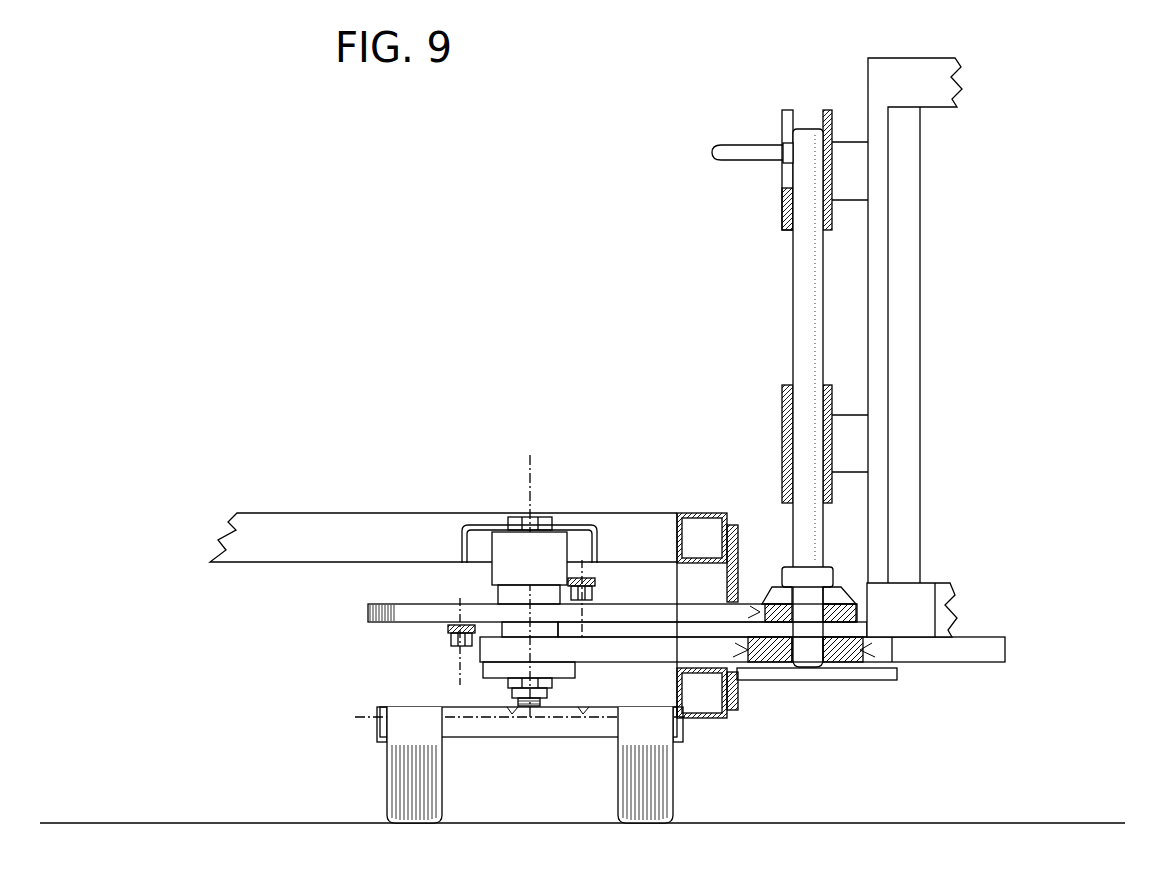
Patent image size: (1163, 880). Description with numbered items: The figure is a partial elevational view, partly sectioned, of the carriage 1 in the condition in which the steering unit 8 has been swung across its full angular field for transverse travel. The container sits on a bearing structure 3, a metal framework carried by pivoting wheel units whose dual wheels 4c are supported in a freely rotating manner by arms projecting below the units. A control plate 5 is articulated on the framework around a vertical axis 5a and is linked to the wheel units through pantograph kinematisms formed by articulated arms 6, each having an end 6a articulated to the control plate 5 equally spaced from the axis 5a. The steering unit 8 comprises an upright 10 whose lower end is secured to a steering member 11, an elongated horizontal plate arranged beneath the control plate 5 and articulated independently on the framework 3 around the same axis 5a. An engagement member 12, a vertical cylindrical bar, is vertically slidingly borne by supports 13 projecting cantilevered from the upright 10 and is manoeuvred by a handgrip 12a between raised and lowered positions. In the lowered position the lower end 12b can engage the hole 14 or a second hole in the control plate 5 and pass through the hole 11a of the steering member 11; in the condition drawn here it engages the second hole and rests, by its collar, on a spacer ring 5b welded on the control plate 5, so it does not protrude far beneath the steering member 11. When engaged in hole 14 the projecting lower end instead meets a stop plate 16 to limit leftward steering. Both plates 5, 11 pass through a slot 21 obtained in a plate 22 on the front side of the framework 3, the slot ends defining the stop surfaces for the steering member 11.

The carriage 1 is at (245, 250).
The bearing structure 3 is at (322, 500).
The dual wheels 4c is at (387, 760).
The control plate 5 is at (357, 607).
The vertical axis 5a is at (530, 462).
The spacer ring 5b is at (842, 602).
The articulated arms 6 is at (597, 593).
The end of arm 6a is at (617, 560).
The steering unit 8 is at (830, 88).
The upright 10 is at (920, 380).
The steering member 11 is at (950, 656).
The hole 11a is at (815, 668).
The engagement member 12 is at (783, 315).
The handgrip 12a is at (725, 163).
The lower end of the vertical bar 12b is at (850, 627).
The supports 13 is at (848, 190).
The hole 14 is at (805, 590).
The stop plate 16 is at (750, 680).
The slot 21 is at (738, 598).
The plate 22 is at (738, 573).